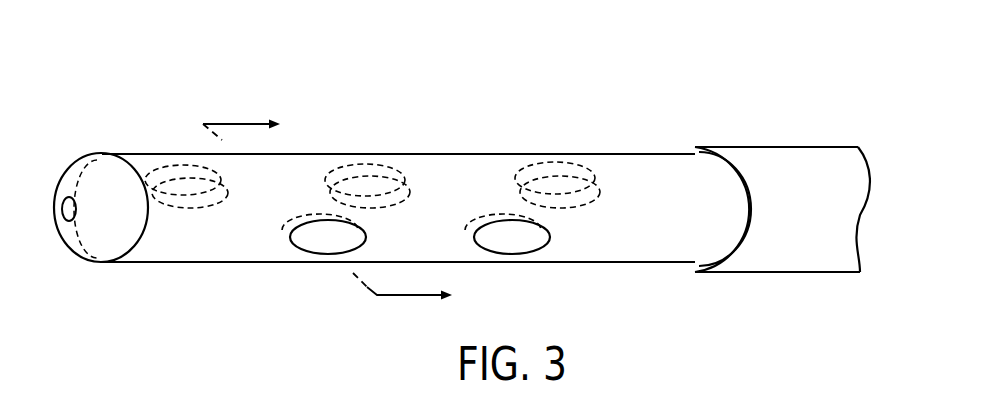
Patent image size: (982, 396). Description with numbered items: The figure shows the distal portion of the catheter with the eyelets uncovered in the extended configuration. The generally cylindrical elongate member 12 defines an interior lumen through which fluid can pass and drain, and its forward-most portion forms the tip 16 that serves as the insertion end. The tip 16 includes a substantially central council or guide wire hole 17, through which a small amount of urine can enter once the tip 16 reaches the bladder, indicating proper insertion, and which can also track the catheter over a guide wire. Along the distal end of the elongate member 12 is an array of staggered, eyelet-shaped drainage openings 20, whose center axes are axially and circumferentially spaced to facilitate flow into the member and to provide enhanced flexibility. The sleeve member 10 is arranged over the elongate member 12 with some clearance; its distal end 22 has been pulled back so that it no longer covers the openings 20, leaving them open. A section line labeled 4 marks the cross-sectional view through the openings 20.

The sleeve member 10 is at (820, 162).
The elongate member 12 is at (603, 255).
The tip 16 is at (103, 190).
The council or guide wire hole 17 is at (70, 222).
The openings 20 is at (183, 180).
The distal end 22 is at (712, 152).
The section line for FIG. 4 is at (327, 210).